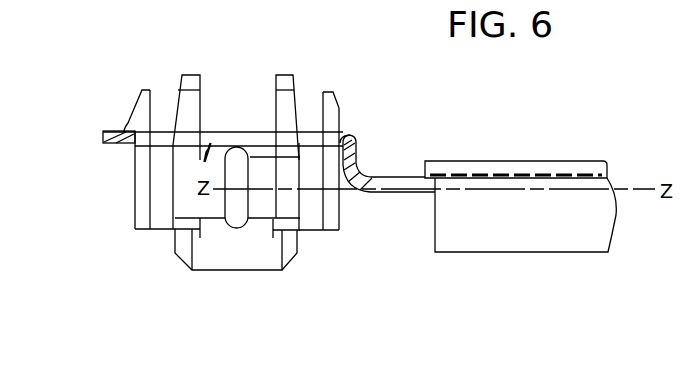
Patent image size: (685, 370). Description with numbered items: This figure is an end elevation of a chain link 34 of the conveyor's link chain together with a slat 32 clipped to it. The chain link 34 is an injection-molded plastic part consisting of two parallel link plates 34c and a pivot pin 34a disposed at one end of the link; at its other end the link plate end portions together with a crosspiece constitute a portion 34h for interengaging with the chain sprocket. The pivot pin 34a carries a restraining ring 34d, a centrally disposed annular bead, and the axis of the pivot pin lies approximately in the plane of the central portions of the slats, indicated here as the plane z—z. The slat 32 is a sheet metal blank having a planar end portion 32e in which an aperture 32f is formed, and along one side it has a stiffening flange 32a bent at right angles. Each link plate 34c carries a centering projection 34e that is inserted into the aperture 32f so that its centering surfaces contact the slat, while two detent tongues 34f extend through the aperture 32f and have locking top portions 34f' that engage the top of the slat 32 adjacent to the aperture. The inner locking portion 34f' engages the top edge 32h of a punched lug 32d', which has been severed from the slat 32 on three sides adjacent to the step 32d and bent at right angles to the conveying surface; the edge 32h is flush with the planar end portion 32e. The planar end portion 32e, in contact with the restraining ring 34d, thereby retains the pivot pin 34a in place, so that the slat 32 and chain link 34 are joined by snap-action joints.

The slat 32 is at (549, 156).
The stiffening flange 32a is at (483, 237).
The step 32d is at (391, 155).
The punched lug 32d' is at (409, 114).
The planar end portion 32e is at (205, 148).
The aperture 32f is at (238, 138).
The top edge 32h is at (350, 135).
The chain link 34 is at (127, 210).
The pivot pin 34a is at (194, 196).
The link plate 34c is at (175, 247).
The restraining ring 34d is at (237, 210).
The centering projection 34e is at (275, 125).
The detent tongue 34f is at (87, 139).
The locking top portion 34f' is at (230, 73).
The sprocket-interengaging portion 34h is at (257, 247).